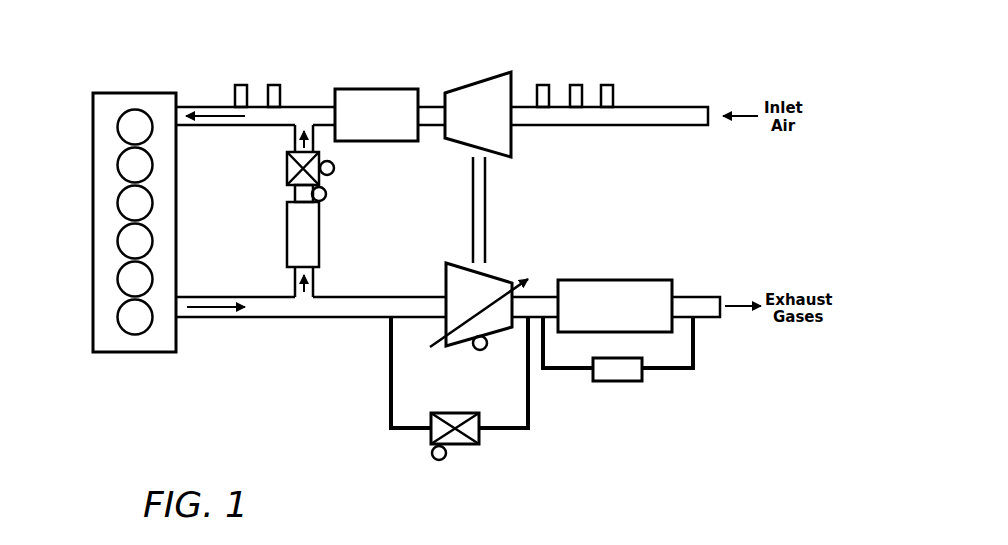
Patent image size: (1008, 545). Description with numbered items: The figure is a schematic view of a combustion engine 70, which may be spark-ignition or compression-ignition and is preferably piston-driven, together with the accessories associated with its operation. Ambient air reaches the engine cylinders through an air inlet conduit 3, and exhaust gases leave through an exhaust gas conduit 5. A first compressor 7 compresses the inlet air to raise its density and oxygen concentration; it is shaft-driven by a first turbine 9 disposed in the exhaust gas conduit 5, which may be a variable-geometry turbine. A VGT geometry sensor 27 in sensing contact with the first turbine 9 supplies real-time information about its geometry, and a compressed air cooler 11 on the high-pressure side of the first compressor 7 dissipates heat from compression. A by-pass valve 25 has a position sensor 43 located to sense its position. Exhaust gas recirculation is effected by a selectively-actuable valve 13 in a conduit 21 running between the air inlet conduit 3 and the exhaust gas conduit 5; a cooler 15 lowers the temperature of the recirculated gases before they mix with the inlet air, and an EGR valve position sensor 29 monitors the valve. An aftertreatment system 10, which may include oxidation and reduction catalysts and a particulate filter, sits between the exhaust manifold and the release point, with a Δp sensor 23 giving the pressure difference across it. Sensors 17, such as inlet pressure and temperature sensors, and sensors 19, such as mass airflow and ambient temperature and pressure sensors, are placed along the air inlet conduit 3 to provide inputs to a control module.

The combustion engine 70 is at (88, 222).
The air inlet conduit 3 is at (303, 103).
The exhaust gas conduit 5 is at (373, 318).
The first compressor 7 is at (476, 92).
The first turbine 9 is at (452, 280).
The aftertreatment system 10 is at (615, 297).
The compressed air cooler 11 is at (380, 97).
The selectively-actuable valve 13 is at (287, 168).
The cooler 15 is at (300, 230).
The sensors 17 is at (241, 85).
The sensors 19 is at (607, 85).
The conduit 21 is at (295, 193).
The Δp sensor 23 is at (619, 382).
The by-pass valve 25 is at (482, 441).
The VGT geometry sensor 27 is at (480, 351).
The EGR valve position sensor 29 is at (335, 169).
The position sensor 43 is at (432, 453).